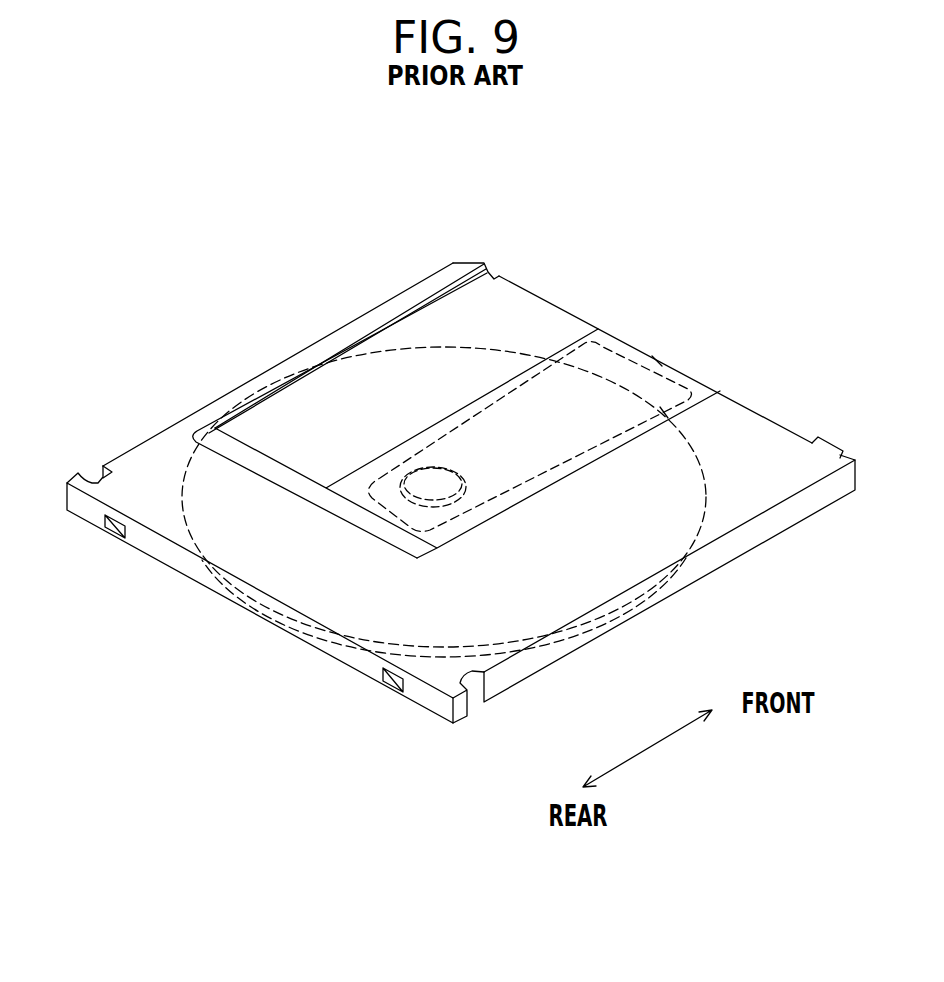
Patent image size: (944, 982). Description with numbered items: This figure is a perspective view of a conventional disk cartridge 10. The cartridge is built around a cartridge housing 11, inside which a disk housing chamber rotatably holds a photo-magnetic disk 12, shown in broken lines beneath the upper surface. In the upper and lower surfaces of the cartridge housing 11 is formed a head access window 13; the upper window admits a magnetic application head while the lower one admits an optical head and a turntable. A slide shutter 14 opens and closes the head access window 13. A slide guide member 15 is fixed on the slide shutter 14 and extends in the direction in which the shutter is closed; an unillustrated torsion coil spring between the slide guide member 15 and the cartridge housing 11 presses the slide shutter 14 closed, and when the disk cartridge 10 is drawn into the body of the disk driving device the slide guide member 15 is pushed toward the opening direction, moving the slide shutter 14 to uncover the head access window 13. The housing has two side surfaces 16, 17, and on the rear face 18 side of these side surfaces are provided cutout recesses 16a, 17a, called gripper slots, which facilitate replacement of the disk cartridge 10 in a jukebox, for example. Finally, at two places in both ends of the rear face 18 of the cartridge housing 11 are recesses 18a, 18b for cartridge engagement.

The disk cartridge 10 is at (137, 280).
The cartridge housing 11 is at (267, 376).
The photo-magnetic disk 12 is at (505, 352).
The head access window 13 is at (658, 362).
The slide shutter 14 is at (613, 335).
The slide guide member 15 is at (813, 443).
The side surface 16 is at (173, 423).
The cutout recess 16a is at (97, 467).
The side surface 17 is at (660, 600).
The cutout recess 17a is at (480, 700).
The rear face 18 is at (315, 647).
The recess 18a is at (112, 533).
The recess 18b is at (393, 684).